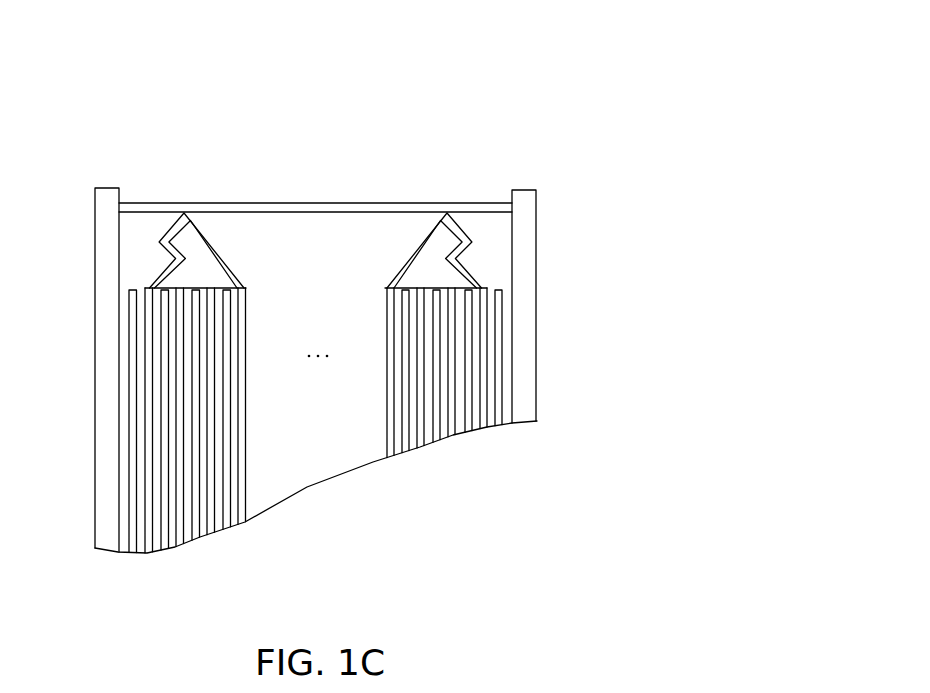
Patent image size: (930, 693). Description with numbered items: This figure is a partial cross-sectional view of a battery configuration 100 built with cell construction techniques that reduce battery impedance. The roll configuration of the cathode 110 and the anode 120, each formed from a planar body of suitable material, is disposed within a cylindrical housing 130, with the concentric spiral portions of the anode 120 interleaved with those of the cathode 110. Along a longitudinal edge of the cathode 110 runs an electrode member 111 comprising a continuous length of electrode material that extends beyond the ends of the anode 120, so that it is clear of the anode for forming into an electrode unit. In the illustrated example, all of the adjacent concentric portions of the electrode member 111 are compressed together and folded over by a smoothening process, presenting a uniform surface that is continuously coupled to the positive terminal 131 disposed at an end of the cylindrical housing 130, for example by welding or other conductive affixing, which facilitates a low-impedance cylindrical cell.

The battery configuration 100 is at (541, 103).
The cathode 110 is at (242, 524).
The electrode member 111 is at (158, 276).
The anode 120 is at (225, 529).
The cylindrical housing 130 is at (106, 263).
The positive terminal 131 is at (442, 201).